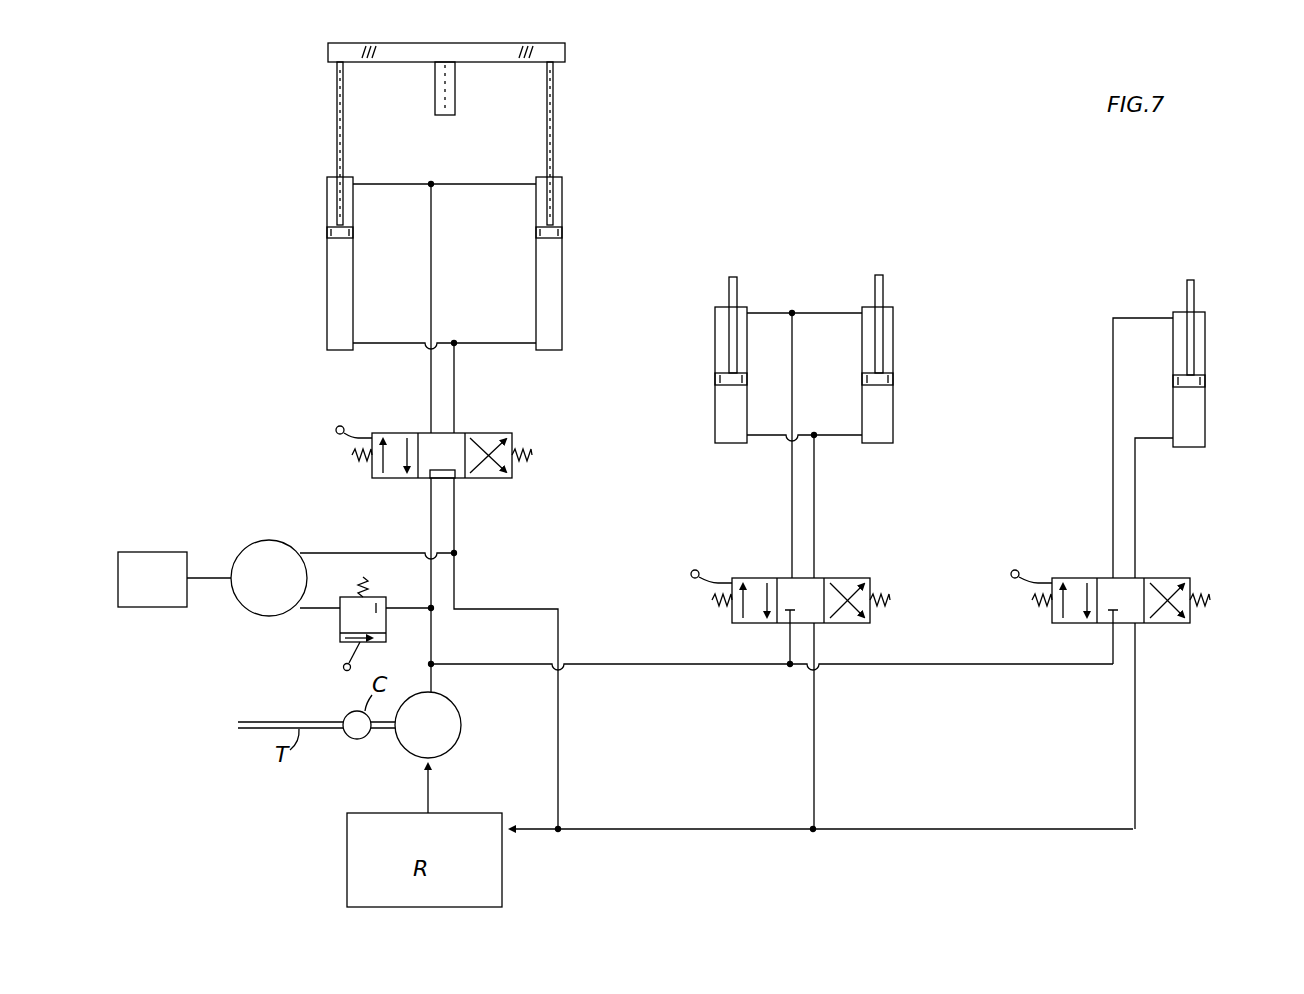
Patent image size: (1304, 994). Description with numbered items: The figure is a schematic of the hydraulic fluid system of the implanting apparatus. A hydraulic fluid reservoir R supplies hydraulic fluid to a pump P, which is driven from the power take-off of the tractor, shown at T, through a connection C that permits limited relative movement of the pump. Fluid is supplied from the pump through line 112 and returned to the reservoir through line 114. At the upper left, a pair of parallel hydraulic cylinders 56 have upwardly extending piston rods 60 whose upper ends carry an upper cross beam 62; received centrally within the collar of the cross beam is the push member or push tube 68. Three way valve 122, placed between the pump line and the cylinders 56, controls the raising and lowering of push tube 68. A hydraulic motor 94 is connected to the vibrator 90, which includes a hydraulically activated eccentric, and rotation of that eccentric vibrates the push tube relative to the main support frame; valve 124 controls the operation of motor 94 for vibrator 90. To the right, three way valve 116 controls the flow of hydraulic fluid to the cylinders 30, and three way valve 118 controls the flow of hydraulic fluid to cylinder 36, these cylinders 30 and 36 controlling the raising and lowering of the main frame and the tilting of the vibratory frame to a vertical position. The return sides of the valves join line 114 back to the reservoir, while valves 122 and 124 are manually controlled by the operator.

The cylinders 30 is at (715, 352).
The cylinder 36 is at (1210, 352).
The hydraulic cylinders 56 is at (327, 272).
The piston rods 60 is at (337, 110).
The upper cross beam 62 is at (328, 55).
The push tube 68 is at (455, 94).
The vibrator 90 is at (148, 552).
The hydraulic motor 94 is at (272, 540).
The line 112 is at (434, 679).
The line 114 is at (537, 831).
The three way valve 116 is at (848, 578).
The three way valve 118 is at (1170, 578).
The three way valve 122 is at (490, 433).
The valve 124 is at (340, 622).